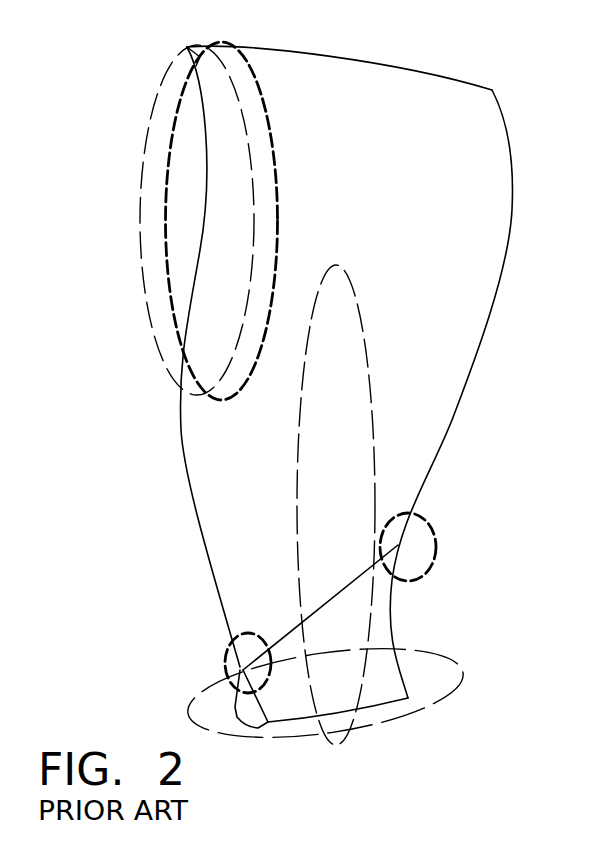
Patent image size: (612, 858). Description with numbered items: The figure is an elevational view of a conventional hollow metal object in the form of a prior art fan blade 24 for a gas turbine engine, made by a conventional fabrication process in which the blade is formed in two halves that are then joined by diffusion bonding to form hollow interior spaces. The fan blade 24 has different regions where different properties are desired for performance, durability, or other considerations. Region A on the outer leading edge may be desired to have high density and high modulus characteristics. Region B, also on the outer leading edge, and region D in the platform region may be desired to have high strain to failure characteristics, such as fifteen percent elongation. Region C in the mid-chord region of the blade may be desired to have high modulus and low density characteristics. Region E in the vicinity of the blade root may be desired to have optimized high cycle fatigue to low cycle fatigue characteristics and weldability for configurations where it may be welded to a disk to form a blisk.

The fan blade 24 is at (440, 232).
The region A is at (142, 174).
The region B is at (166, 270).
The region C is at (370, 387).
The region D is at (232, 649).
The region E is at (426, 655).